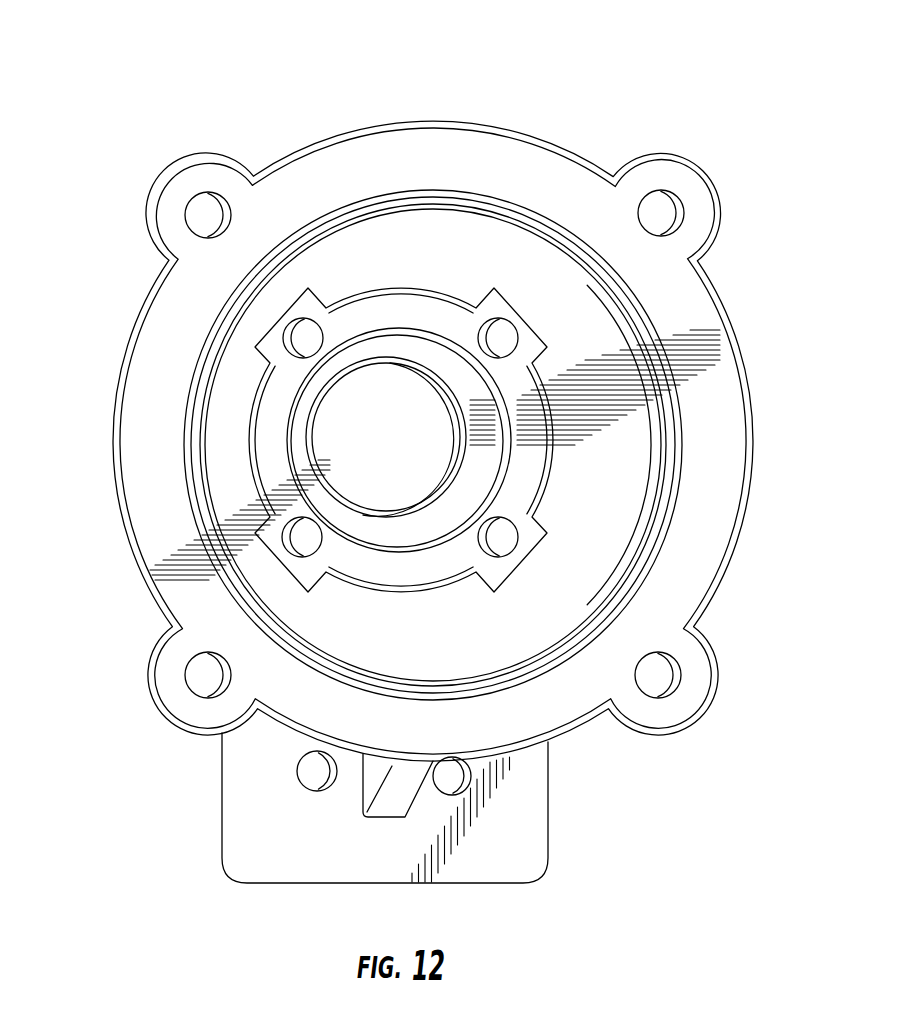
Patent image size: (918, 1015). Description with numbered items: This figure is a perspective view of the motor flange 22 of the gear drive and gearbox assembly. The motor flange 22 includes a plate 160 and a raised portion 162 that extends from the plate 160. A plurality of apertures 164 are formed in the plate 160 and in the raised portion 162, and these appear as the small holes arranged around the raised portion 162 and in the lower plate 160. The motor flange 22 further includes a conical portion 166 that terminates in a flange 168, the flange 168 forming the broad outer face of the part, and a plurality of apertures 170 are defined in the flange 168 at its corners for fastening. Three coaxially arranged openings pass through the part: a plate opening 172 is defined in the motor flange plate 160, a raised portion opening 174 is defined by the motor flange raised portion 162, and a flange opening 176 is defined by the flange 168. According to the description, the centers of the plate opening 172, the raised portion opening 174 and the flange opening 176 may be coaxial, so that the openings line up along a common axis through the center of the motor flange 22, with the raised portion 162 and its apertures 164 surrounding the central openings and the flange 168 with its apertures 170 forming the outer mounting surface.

The motor flange 22 is at (638, 90).
The plate 160 is at (240, 838).
The raised portion 162 is at (263, 455).
The apertures 164 is at (284, 541).
The conical portion 166 is at (623, 447).
The flange 168 is at (707, 520).
The apertures 170 is at (672, 690).
The plate opening 172 is at (324, 426).
The raised portion opening 174 is at (306, 386).
The flange opening 176 is at (308, 614).